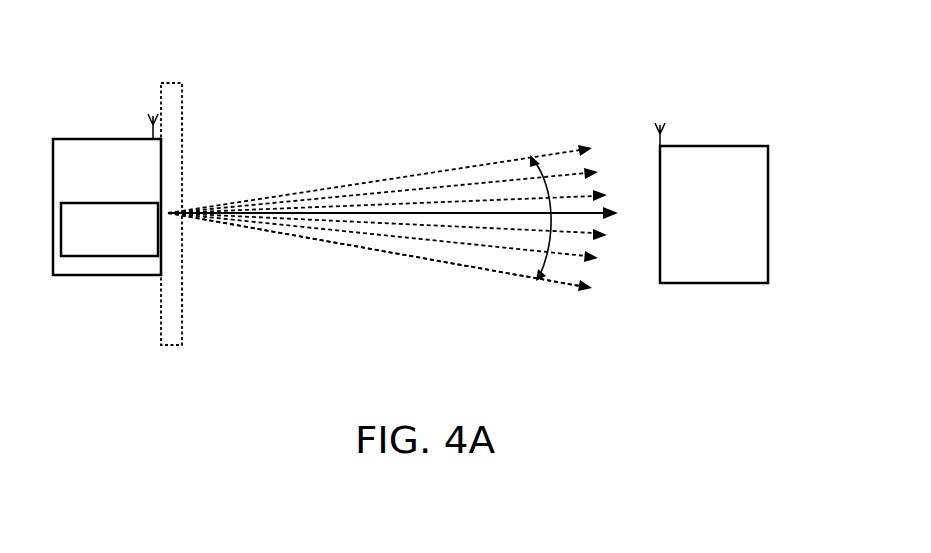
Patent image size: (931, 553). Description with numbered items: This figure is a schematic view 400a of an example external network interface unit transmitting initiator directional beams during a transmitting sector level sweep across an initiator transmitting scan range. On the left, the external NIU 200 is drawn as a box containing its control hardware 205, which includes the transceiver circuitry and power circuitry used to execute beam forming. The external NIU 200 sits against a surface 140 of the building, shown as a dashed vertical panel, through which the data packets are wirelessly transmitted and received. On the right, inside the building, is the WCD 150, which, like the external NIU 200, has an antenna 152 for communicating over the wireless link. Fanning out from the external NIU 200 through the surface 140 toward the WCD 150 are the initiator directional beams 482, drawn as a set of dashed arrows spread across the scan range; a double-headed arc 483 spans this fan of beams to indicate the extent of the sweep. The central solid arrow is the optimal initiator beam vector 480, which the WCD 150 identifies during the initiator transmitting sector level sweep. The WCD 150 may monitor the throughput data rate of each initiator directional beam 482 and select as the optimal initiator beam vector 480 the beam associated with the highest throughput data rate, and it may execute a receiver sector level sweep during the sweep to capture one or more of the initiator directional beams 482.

The schematic view 400a is at (649, 49).
The surface 140 is at (183, 116).
The WCD 150 is at (714, 214).
The antenna 152 is at (150, 124).
The external NIU 200 is at (107, 207).
The control hardware 205 is at (109, 229).
The optimal initiator beam vector 480 is at (475, 214).
The initiator directional beams 482 is at (443, 263).
The beam sweep range 483 is at (549, 263).